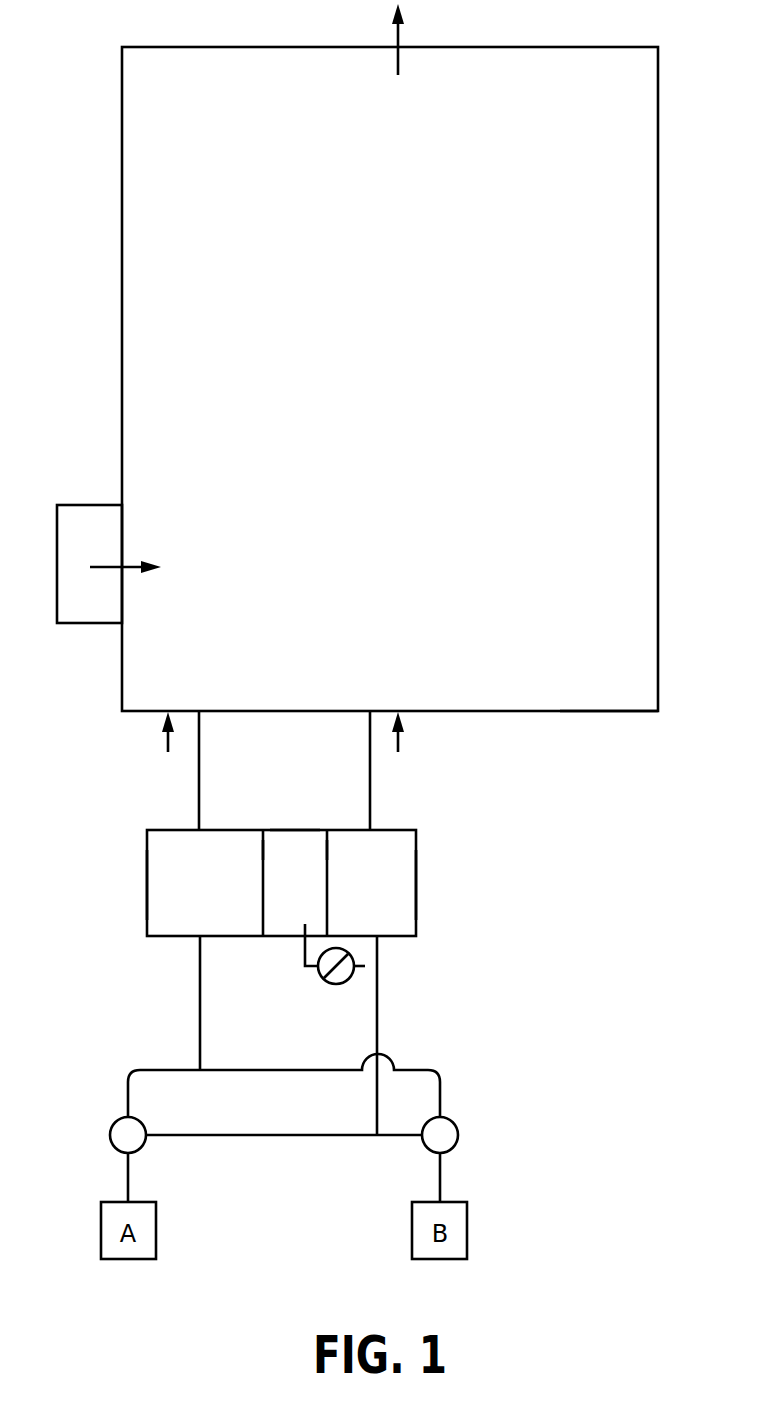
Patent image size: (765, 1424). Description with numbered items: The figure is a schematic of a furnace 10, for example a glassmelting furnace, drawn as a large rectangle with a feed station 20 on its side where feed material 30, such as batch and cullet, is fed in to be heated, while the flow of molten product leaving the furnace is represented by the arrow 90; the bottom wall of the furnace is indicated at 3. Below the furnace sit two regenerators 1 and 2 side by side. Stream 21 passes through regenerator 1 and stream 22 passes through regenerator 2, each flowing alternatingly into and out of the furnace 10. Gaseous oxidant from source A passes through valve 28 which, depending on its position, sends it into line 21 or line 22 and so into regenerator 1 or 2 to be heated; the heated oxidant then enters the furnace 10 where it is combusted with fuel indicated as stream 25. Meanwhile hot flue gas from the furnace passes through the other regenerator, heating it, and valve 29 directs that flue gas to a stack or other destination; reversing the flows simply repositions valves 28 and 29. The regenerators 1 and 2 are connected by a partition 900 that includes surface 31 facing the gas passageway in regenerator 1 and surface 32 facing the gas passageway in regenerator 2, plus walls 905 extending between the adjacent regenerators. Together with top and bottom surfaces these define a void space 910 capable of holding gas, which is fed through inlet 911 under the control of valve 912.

The furnace 10 is at (350, 233).
The flow of molten product 90 is at (410, 49).
The feed station 20 is at (77, 549).
The feed material 30 is at (126, 552).
The vessel bottom wall 3 is at (613, 710).
The fuel stream 25 is at (284, 741).
The stream (line) 21 is at (199, 787).
The stream (line) 22 is at (370, 787).
The partition 900 is at (270, 823).
The walls 905 is at (292, 829).
The regenerator 1 is at (210, 897).
The void space 910 is at (312, 894).
The regenerator 2 is at (376, 897).
The surface 31 is at (263, 851).
The surface 32 is at (327, 852).
The inlet 911 is at (300, 957).
The valve 912 is at (341, 981).
The valve 28 is at (110, 1128).
The valve 29 is at (459, 1135).